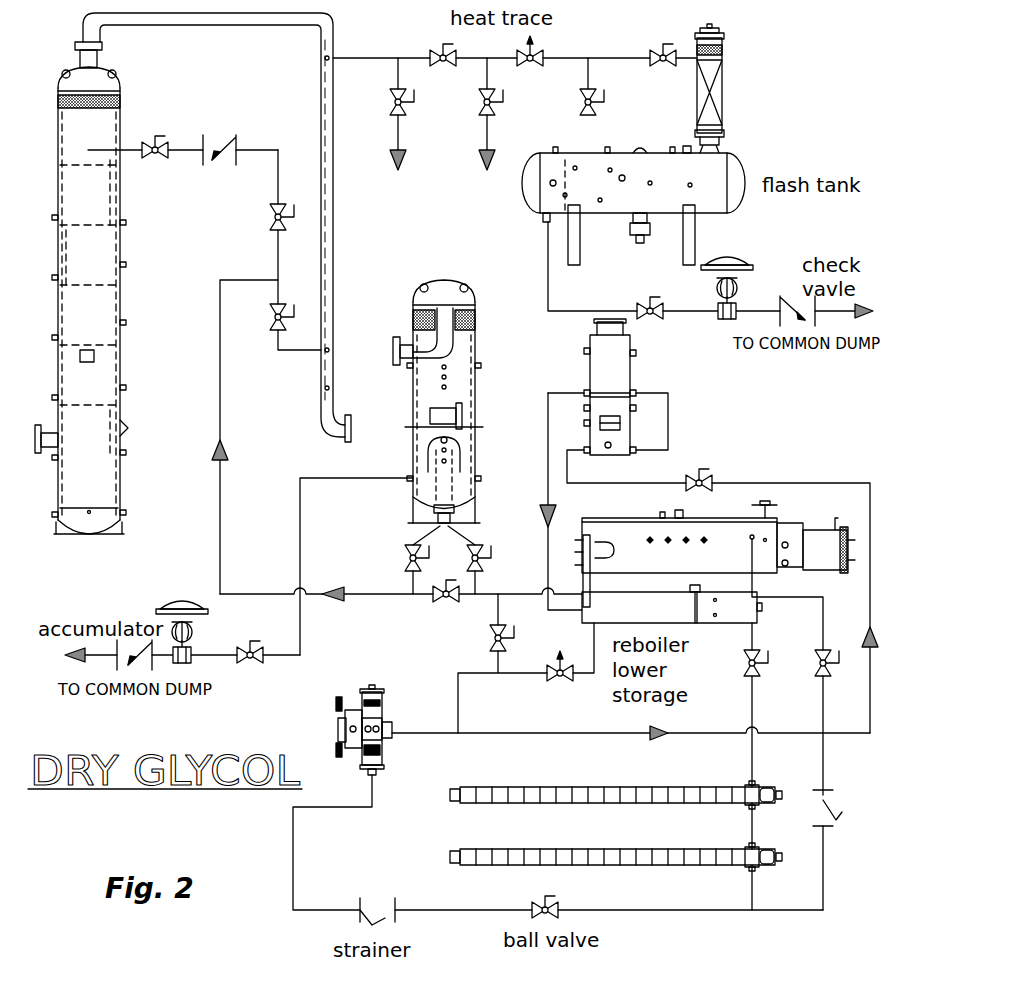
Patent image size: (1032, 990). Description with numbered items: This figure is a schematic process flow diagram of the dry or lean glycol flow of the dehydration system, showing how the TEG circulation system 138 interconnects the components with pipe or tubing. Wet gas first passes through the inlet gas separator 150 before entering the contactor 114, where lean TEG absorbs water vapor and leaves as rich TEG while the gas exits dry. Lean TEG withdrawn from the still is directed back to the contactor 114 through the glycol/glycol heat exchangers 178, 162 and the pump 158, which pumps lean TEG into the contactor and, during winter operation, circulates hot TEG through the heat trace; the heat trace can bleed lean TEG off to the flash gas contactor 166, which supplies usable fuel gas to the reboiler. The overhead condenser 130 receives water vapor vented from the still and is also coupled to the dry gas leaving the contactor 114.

The contactor 114 is at (79, 316).
The inlet gas separator 150 is at (433, 375).
The flash gas contactor 166 is at (762, 88).
The overhead condenser 130 is at (687, 387).
The TEG circulation system 138 is at (715, 554).
The pump 158 is at (372, 716).
The glycol/glycol heat exchanger 178 is at (616, 786).
The glycol/glycol heat exchanger 162 is at (616, 848).